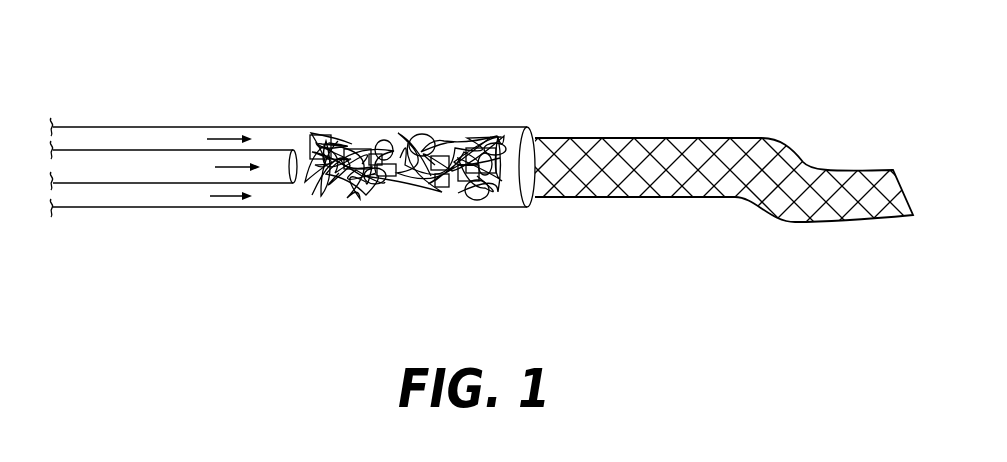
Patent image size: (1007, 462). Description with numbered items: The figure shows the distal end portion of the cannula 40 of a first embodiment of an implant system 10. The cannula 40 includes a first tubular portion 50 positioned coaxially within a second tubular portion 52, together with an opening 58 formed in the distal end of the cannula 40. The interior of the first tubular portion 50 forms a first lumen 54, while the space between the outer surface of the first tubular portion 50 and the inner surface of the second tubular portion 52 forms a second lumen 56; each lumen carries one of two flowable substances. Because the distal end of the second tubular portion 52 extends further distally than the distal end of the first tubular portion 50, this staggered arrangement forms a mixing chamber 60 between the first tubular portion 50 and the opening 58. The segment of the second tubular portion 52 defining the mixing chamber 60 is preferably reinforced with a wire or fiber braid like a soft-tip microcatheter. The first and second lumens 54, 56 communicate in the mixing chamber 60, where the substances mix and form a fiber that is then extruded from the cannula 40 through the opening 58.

The system 10 is at (487, 88).
The cannula 40 is at (80, 120).
The first tubular portion 50 is at (276, 148).
The second tubular portion 52 is at (527, 125).
The first lumen 54 is at (272, 170).
The second lumen 56 is at (153, 195).
The opening 58 is at (528, 208).
The mixing chamber 60 is at (388, 187).